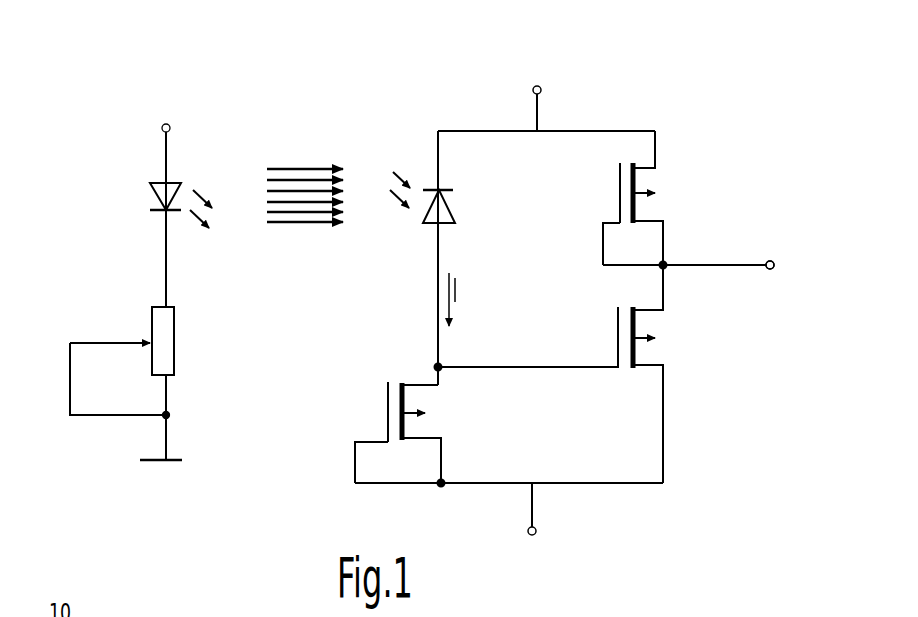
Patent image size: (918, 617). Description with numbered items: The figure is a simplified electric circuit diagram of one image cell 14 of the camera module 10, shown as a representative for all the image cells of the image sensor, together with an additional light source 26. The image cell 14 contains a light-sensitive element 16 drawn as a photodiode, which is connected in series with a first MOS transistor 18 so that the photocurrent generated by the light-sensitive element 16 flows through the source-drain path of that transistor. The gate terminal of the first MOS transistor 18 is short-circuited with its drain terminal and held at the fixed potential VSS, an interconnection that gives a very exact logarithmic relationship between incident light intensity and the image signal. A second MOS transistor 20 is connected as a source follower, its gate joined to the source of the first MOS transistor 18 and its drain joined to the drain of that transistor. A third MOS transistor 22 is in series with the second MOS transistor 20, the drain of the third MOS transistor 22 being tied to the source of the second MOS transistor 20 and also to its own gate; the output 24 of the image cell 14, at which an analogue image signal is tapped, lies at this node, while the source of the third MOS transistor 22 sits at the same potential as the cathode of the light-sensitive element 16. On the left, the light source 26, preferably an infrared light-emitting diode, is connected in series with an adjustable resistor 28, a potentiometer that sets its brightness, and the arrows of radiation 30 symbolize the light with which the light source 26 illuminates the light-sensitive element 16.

The camera module 10 is at (158, 233).
The image cell 14 is at (617, 113).
The light-sensitive element 16 is at (457, 205).
The first MOS transistor 18 is at (386, 405).
The second MOS transistor 20 is at (617, 348).
The third MOS transistor 22 is at (638, 210).
The output 24 is at (771, 270).
The light source 26 is at (150, 192).
The adjustable resistor 28 is at (175, 345).
The radiation 30 is at (293, 162).